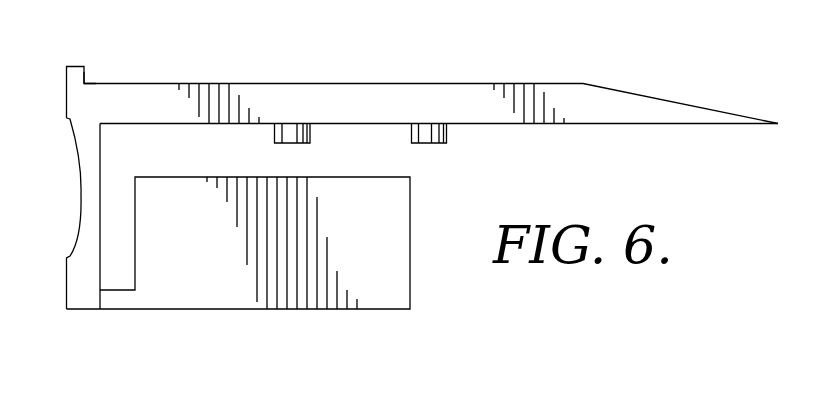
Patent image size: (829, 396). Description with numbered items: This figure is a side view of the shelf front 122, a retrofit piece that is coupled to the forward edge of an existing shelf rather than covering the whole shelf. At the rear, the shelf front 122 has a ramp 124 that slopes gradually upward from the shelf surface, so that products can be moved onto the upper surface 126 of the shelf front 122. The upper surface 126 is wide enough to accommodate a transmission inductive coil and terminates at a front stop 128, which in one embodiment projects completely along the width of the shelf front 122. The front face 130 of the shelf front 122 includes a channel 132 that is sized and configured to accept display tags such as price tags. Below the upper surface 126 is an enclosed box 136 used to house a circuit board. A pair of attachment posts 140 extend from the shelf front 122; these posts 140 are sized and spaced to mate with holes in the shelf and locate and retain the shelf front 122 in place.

The shelf front 122 is at (362, 83).
The ramp 124 is at (660, 99).
The upper surface 126 is at (233, 83).
The front stop 128 is at (85, 77).
The front face 130 is at (58, 74).
The channel 132 is at (78, 147).
The enclosed box 136 is at (382, 310).
The attachment posts 140 is at (298, 144).